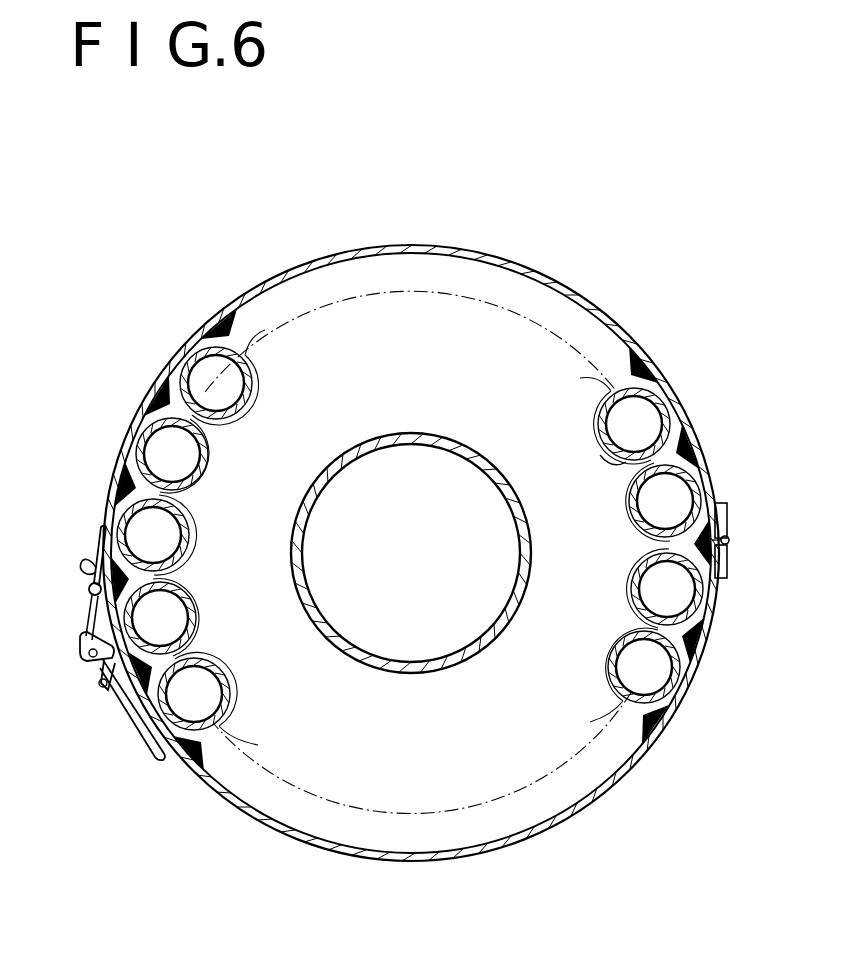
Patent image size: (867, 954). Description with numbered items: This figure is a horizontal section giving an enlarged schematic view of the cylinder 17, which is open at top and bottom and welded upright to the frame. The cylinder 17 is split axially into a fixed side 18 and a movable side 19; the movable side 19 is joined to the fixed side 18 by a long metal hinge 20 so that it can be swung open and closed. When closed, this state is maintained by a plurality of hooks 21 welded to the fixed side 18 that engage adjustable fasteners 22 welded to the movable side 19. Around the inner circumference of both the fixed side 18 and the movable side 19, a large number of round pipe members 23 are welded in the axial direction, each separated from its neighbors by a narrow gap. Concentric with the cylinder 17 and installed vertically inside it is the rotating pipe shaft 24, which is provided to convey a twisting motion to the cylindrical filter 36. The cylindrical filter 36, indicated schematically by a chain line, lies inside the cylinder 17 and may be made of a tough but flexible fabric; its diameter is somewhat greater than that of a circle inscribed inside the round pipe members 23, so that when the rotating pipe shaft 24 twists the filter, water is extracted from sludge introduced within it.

The cylinder 17 is at (583, 298).
The fixed side 18 is at (292, 268).
The movable side 19 is at (515, 843).
The long metal hinge 20 is at (727, 525).
The hooks 21 is at (86, 567).
The adjustable fasteners 22 is at (99, 688).
The round pipe members 23 is at (167, 397).
The rotating pipe shaft 24 is at (407, 675).
The cylindrical filter 36 is at (605, 460).